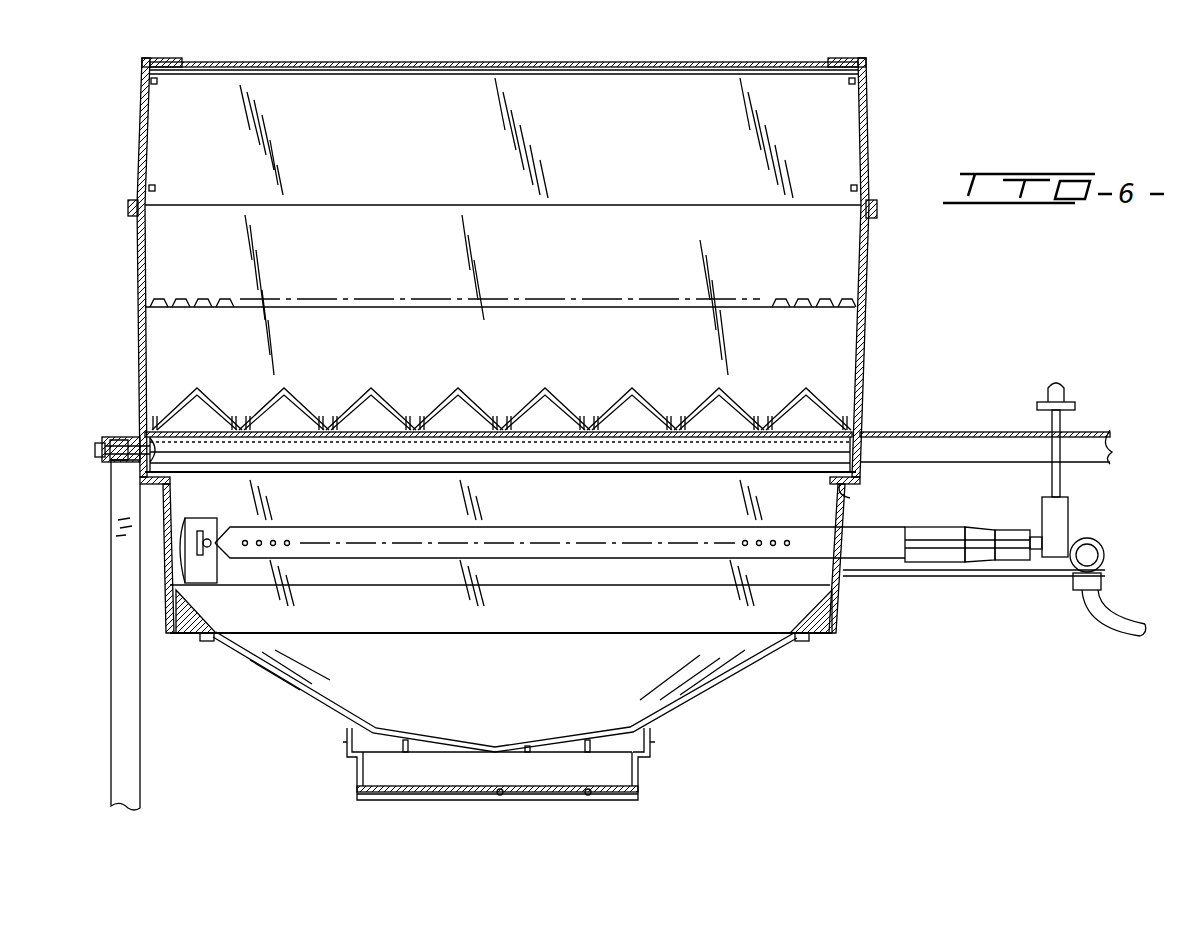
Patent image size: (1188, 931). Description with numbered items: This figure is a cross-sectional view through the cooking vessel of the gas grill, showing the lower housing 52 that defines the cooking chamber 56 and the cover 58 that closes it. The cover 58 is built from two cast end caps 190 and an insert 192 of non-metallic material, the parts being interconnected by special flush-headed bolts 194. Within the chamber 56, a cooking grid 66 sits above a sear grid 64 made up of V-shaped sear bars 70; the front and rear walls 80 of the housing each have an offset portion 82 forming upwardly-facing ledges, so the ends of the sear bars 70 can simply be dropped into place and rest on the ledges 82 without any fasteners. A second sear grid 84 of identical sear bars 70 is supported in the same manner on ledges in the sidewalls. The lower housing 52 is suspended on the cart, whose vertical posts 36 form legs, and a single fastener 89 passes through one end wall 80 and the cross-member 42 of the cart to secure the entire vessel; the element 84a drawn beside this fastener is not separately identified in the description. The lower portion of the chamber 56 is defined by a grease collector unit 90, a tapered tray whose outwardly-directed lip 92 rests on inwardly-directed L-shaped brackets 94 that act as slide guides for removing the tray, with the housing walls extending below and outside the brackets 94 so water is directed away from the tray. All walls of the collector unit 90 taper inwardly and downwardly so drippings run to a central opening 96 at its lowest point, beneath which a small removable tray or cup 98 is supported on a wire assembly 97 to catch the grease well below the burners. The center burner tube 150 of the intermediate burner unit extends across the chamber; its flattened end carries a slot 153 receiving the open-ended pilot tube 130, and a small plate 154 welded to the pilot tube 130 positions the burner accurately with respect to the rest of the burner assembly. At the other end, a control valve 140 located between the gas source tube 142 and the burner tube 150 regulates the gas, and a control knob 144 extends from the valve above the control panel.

The vertical posts 36 is at (140, 776).
The cross-member 42 is at (112, 440).
The lower housing 52 is at (507, 251).
The chamber 56 is at (812, 268).
The cover 58 is at (872, 97).
The sear grid 64 is at (606, 477).
The cooking grid 66 is at (230, 300).
The sear bar 70 is at (335, 476).
The front and rear walls 80 is at (140, 345).
The offset portion 82 is at (150, 484).
The second sear grid 84 is at (830, 398).
The bolt 84a is at (98, 452).
The fastener 89 is at (130, 447).
The grease collector unit 90 is at (690, 712).
The outwardly-directed lip 92 is at (212, 642).
The L-shaped brackets 94 is at (809, 641).
The central opening 96 is at (472, 748).
The wire assembly 97 is at (645, 778).
The small removable tray 98 is at (522, 798).
The pilot tube 130 is at (209, 538).
The control valve 140 is at (1055, 545).
The gas source tube 142 is at (1105, 548).
The control knob 144 is at (1070, 412).
The center burner tube 150 is at (550, 560).
The slot 153 is at (200, 548).
The plate 154 is at (192, 533).
The end caps 190 is at (140, 122).
The insert 192 is at (398, 62).
The flush-headed bolts 194 is at (157, 81).